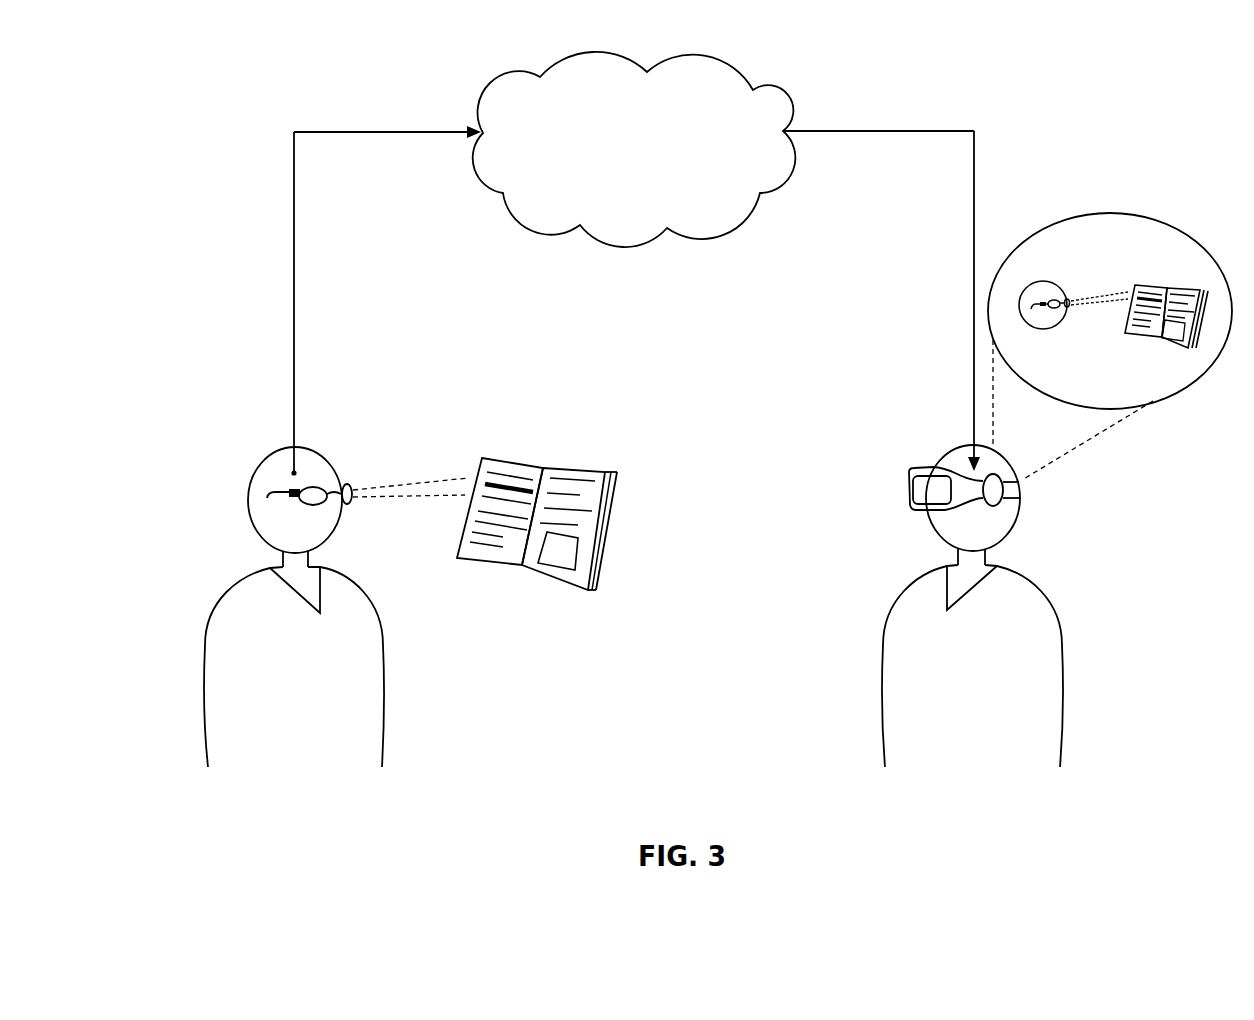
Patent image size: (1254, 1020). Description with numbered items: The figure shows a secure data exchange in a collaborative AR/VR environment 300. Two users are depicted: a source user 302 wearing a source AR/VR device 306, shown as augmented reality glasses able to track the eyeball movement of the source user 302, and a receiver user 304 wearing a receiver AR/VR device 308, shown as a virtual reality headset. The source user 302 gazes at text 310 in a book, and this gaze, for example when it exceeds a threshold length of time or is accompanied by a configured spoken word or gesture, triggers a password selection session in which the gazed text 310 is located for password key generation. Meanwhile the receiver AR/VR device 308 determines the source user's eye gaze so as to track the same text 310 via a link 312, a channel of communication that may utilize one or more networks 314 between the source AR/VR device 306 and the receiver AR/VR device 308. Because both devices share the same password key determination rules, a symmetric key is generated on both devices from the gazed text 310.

The collaborative AR/VR environment 300 is at (980, 76).
The source user 302 is at (276, 691).
The receiver user 304 is at (950, 691).
The source AR/VR device 306 is at (354, 477).
The receiver AR/VR device 308 is at (896, 481).
The text 310 is at (525, 447).
The link 312 is at (357, 132).
The networks 314 is at (618, 169).